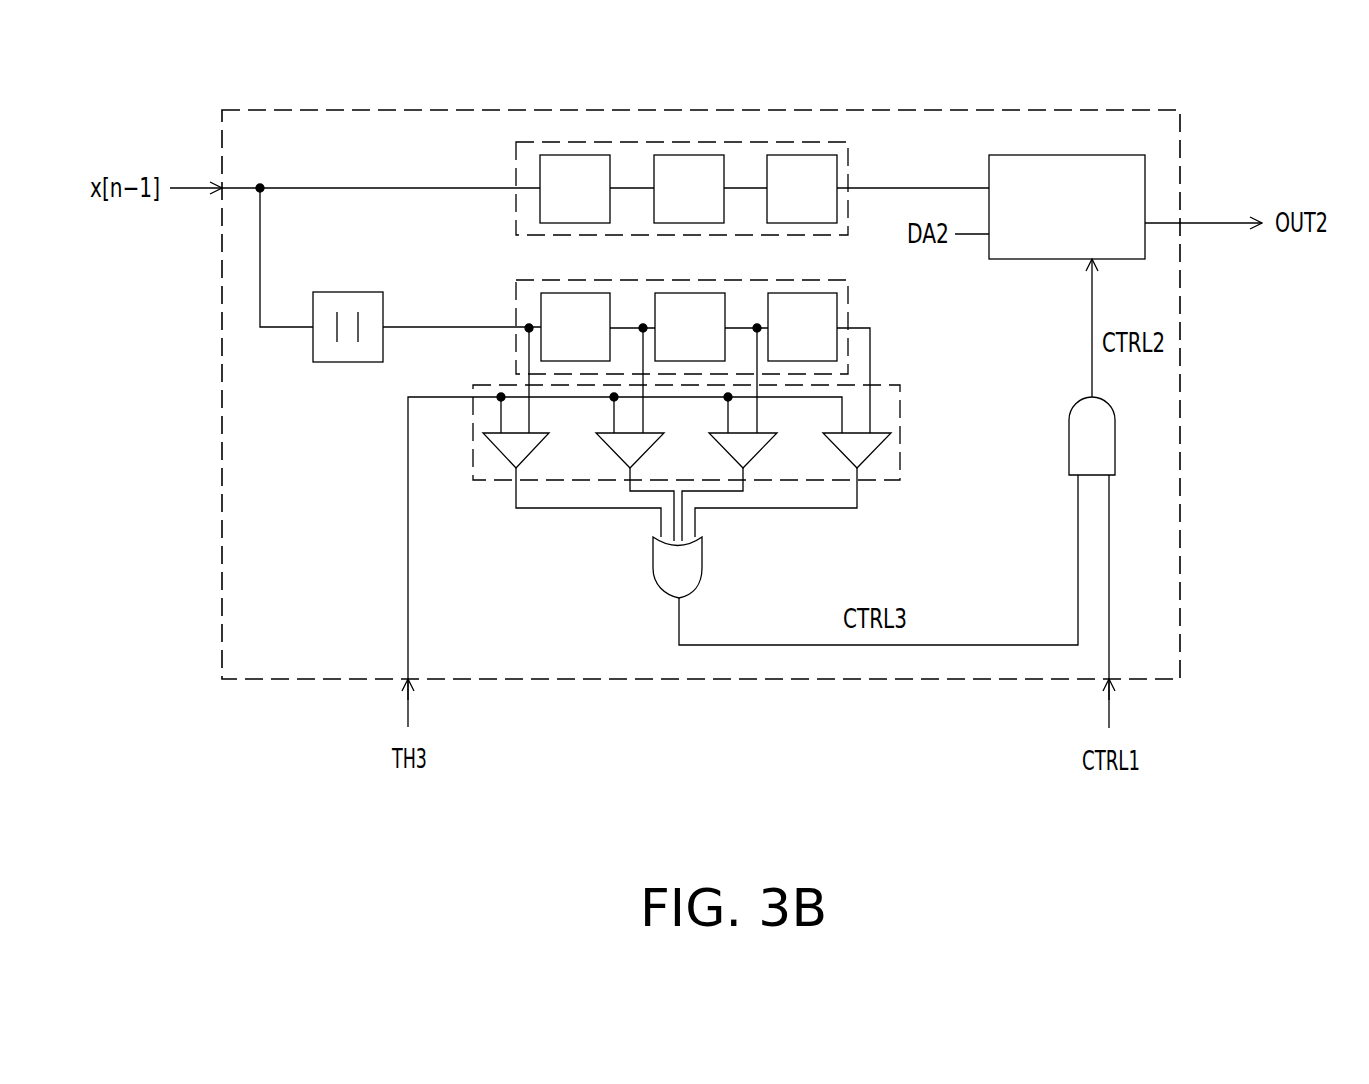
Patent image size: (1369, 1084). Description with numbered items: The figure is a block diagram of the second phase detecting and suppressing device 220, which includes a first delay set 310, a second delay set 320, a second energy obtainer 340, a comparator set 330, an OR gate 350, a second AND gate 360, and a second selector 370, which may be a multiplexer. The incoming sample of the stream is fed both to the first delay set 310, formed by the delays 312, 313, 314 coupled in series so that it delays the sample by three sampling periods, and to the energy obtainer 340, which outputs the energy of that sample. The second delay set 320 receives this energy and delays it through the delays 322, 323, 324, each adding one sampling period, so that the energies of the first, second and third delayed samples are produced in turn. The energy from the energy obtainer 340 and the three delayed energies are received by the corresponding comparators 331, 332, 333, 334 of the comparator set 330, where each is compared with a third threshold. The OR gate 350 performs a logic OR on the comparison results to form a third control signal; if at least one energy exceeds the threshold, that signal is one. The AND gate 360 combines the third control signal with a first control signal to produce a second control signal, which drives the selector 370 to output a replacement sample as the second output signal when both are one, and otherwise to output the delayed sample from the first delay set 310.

The second phase detecting and suppressing device 220 is at (1180, 148).
The first delay set 310 is at (848, 150).
The delay 312 is at (571, 155).
The delay 313 is at (685, 155).
The delay 314 is at (797, 155).
The second delay set 320 is at (848, 290).
The delay 322 is at (570, 293).
The delay 323 is at (685, 293).
The delay 324 is at (797, 293).
The comparator set 330 is at (900, 408).
The comparator 331 is at (537, 447).
The comparator 332 is at (651, 447).
The comparator 333 is at (764, 447).
The comparator 334 is at (878, 447).
The second energy obtainer 340 is at (328, 292).
The OR gate 350 is at (703, 561).
The second AND gate 360 is at (1082, 396).
The second selector 370 is at (1048, 155).